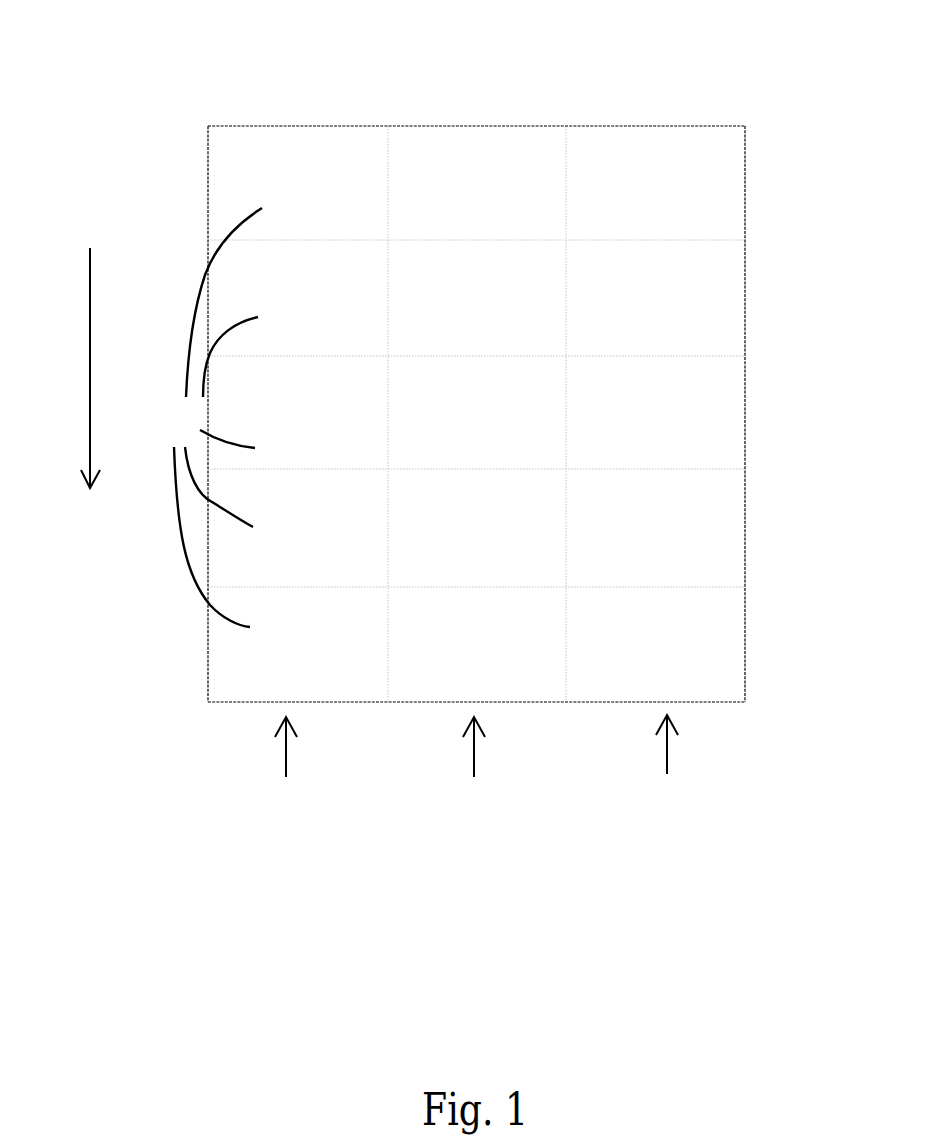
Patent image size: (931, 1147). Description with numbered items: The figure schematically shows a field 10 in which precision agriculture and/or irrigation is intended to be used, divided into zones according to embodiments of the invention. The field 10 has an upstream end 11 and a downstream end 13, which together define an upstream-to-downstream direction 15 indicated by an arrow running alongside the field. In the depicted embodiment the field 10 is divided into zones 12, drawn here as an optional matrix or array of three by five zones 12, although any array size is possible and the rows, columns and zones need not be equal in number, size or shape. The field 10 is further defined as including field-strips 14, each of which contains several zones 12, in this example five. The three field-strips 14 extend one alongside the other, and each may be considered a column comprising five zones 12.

The field 10 is at (453, 368).
The upstream end 11 is at (168, 137).
The zones 12 is at (213, 417).
The downstream end 13 is at (182, 722).
The field-strips 14 is at (473, 773).
The upstream-to-downstream direction 15 is at (78, 368).